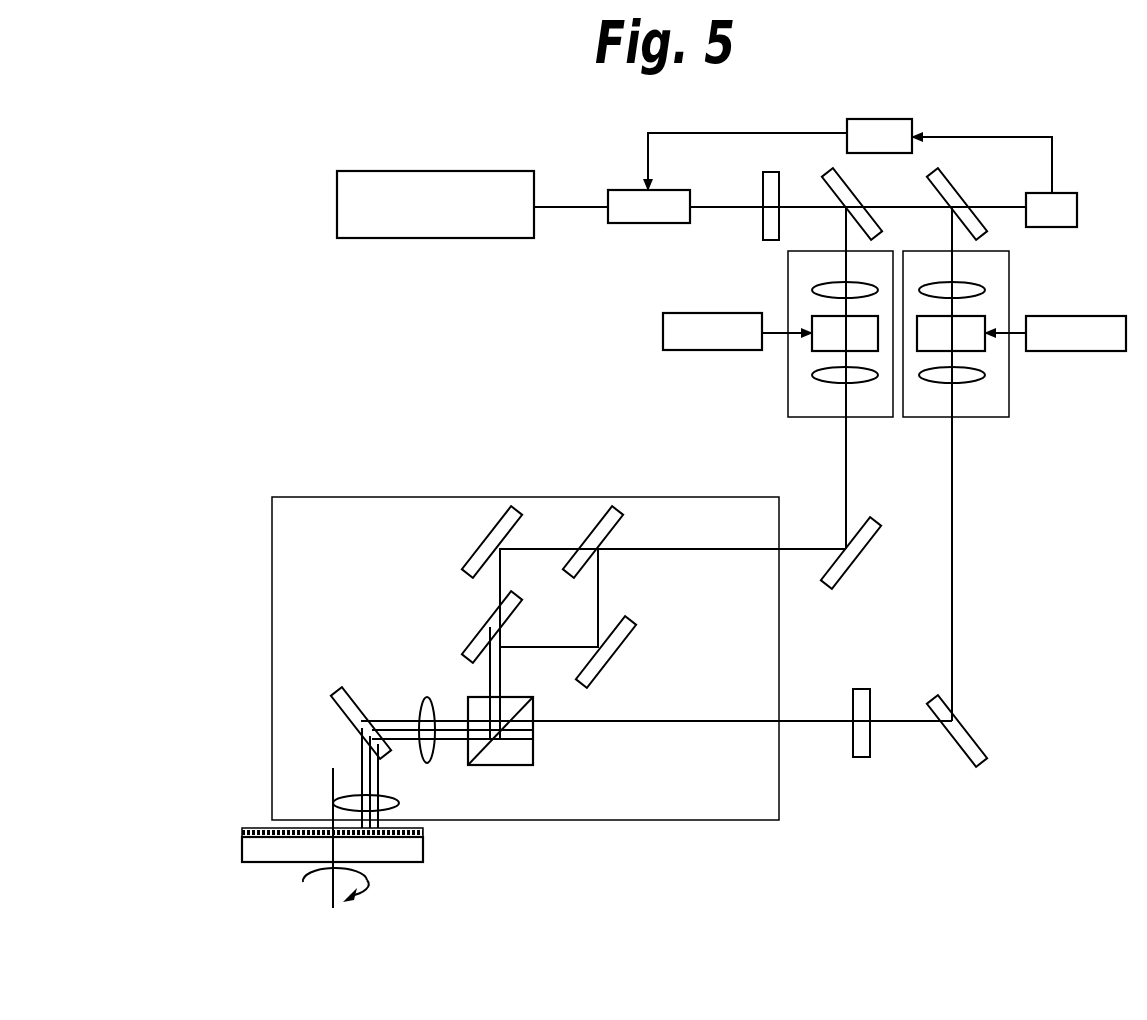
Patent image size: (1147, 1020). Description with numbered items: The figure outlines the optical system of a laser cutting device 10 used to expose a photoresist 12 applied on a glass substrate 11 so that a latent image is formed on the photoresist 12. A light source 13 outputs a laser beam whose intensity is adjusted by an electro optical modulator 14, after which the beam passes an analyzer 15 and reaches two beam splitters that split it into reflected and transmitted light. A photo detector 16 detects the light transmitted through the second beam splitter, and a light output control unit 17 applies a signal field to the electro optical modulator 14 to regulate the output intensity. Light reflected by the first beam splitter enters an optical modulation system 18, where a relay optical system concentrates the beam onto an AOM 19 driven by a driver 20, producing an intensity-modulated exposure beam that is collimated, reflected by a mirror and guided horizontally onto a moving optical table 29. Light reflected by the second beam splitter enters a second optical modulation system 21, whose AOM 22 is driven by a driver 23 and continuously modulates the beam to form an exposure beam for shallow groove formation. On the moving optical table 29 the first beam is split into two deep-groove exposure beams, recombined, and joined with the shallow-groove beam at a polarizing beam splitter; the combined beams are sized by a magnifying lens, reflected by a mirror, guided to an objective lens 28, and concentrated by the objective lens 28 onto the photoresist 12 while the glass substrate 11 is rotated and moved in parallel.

The laser cutting device 10 is at (421, 141).
The glass substrate 11 is at (413, 865).
The photoresist 12 is at (254, 828).
The light source 13 is at (434, 238).
The electro optical modulator 14 is at (622, 223).
The analyzer 15 is at (769, 240).
The photo detector 16 is at (1036, 227).
The light output control unit 17 is at (847, 145).
The optical modulation system 18 is at (817, 356).
The AOM 19 is at (818, 316).
The driver 20 is at (698, 313).
The optical modulation system 21 is at (980, 356).
The AOM 22 is at (980, 316).
The driver 23 is at (1060, 316).
The objective lens 28 is at (395, 795).
The moving optical table 29 is at (445, 497).